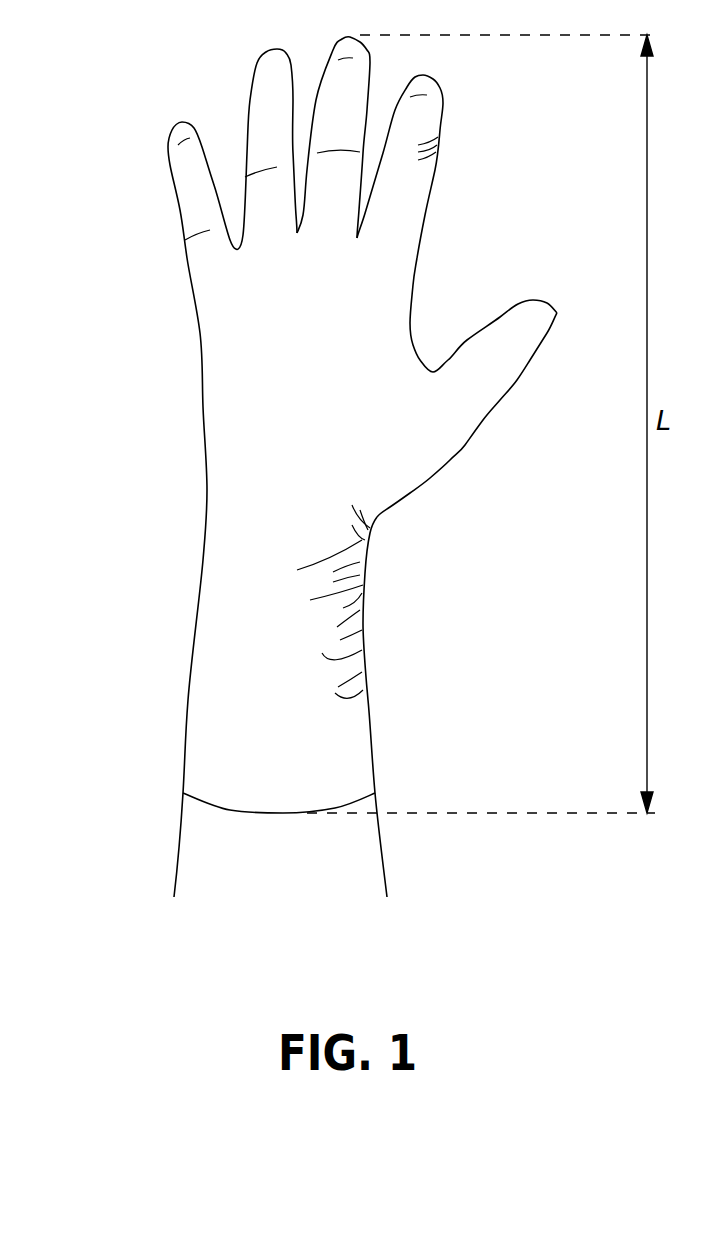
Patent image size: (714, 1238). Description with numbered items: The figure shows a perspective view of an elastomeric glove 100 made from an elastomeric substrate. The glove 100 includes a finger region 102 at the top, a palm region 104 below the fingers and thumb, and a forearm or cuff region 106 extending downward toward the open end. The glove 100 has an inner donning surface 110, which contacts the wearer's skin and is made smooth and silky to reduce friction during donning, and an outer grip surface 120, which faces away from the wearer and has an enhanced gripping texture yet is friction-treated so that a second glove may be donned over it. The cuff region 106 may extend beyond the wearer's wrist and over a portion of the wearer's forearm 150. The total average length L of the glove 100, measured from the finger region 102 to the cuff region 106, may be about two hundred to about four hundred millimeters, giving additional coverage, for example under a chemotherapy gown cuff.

The elastomeric glove 100 is at (290, 467).
The finger region 102 is at (235, 83).
The palm region 104 is at (283, 346).
The cuff region 106 is at (253, 708).
The inner donning surface 110 is at (307, 780).
The outer grip surface 120 is at (402, 255).
The forearm 150 is at (300, 877).